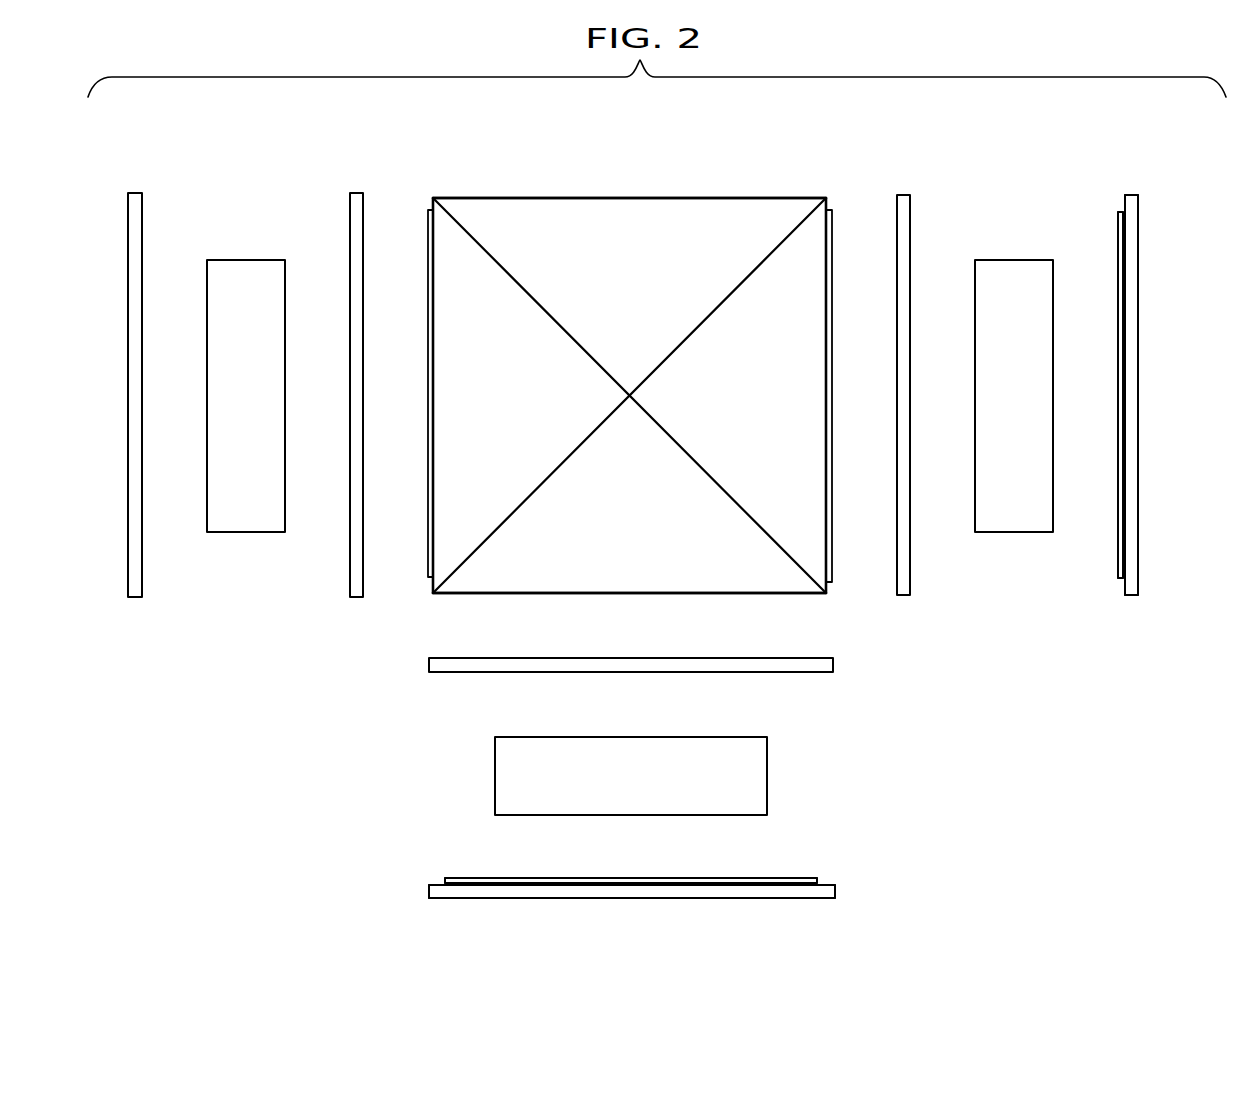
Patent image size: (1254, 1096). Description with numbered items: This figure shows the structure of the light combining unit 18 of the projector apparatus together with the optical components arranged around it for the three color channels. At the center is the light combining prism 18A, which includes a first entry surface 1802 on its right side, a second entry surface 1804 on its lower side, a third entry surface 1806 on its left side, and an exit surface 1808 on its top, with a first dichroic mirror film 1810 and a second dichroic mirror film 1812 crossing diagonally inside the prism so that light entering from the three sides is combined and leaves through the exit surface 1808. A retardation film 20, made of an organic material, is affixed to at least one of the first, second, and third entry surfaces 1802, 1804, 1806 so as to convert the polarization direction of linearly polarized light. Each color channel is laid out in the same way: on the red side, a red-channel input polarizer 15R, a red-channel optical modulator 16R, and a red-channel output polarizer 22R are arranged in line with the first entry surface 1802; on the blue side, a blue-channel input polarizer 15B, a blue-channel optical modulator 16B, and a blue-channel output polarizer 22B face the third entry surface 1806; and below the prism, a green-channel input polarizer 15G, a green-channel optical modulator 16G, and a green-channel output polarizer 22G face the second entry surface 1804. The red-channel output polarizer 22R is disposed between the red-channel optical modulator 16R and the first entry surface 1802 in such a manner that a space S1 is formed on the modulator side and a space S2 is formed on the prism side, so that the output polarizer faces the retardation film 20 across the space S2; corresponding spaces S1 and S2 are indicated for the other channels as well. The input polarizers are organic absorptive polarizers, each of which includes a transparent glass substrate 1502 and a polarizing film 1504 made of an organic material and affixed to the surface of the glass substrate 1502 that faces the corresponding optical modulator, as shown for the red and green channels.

The blue-channel input polarizer 15B is at (136, 212).
The blue-channel optical modulator 16B is at (235, 268).
The blue-channel output polarizer 22B is at (357, 213).
The red-channel input polarizer 15R is at (1145, 196).
The red-channel optical modulator 16R is at (1013, 273).
The red-channel output polarizer 22R is at (908, 228).
The green-channel input polarizer 15G is at (815, 873).
The green-channel optical modulator 16G is at (502, 772).
The green-channel output polarizer 22G is at (778, 667).
The light combining unit 18 is at (642, 397).
The light combining prism 18A is at (629, 395).
The first entry surface 1802 is at (836, 237).
The second entry surface 1804 is at (782, 595).
The third entry surface 1806 is at (428, 233).
The exit surface 1808 is at (641, 197).
The first dichroic mirror film 1810 is at (518, 292).
The second dichroic mirror film 1812 is at (737, 290).
The retardation film 20 is at (642, 398).
The glass substrate 1502 is at (1132, 275).
The polarizing film 1504 is at (1117, 262).
The space S1 is at (318, 378).
The space S2 is at (396, 378).